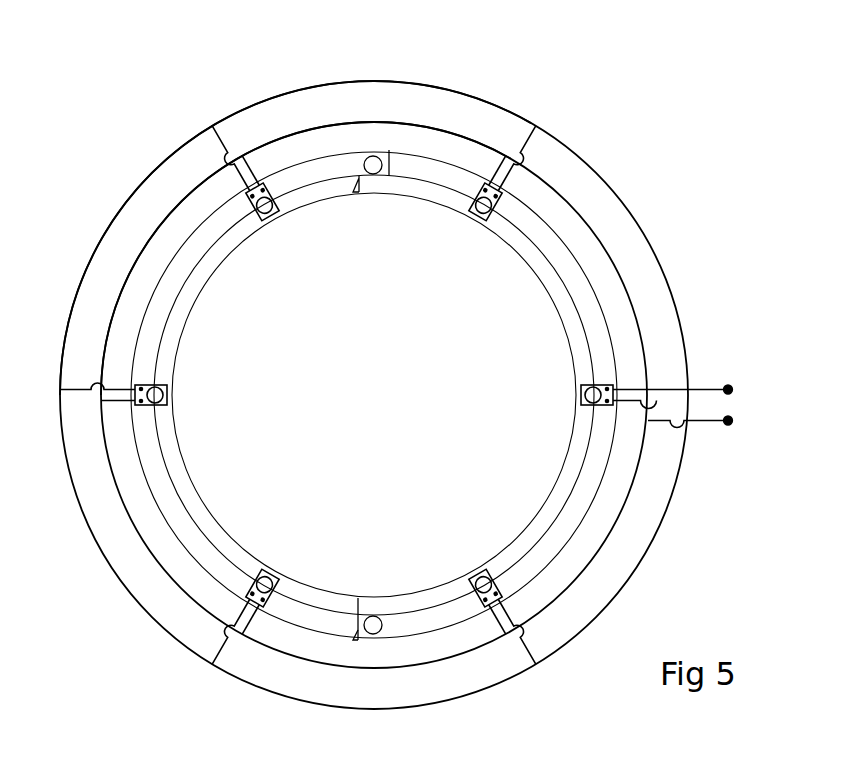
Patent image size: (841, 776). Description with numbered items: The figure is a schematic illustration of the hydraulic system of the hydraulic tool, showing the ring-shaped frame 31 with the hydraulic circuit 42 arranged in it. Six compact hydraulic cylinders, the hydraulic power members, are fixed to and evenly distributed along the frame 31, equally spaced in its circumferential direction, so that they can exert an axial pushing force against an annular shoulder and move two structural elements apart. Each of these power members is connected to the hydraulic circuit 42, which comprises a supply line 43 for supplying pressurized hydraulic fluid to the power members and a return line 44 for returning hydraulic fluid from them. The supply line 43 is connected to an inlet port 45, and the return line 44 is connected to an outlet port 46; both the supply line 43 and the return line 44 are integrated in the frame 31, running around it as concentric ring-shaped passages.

The ring-shaped frame 31 is at (433, 196).
The hydraulic circuit 42 is at (614, 153).
The supply line 43 is at (293, 130).
The return line 44 is at (187, 142).
The inlet port 45 is at (728, 426).
The outlet port 46 is at (728, 384).